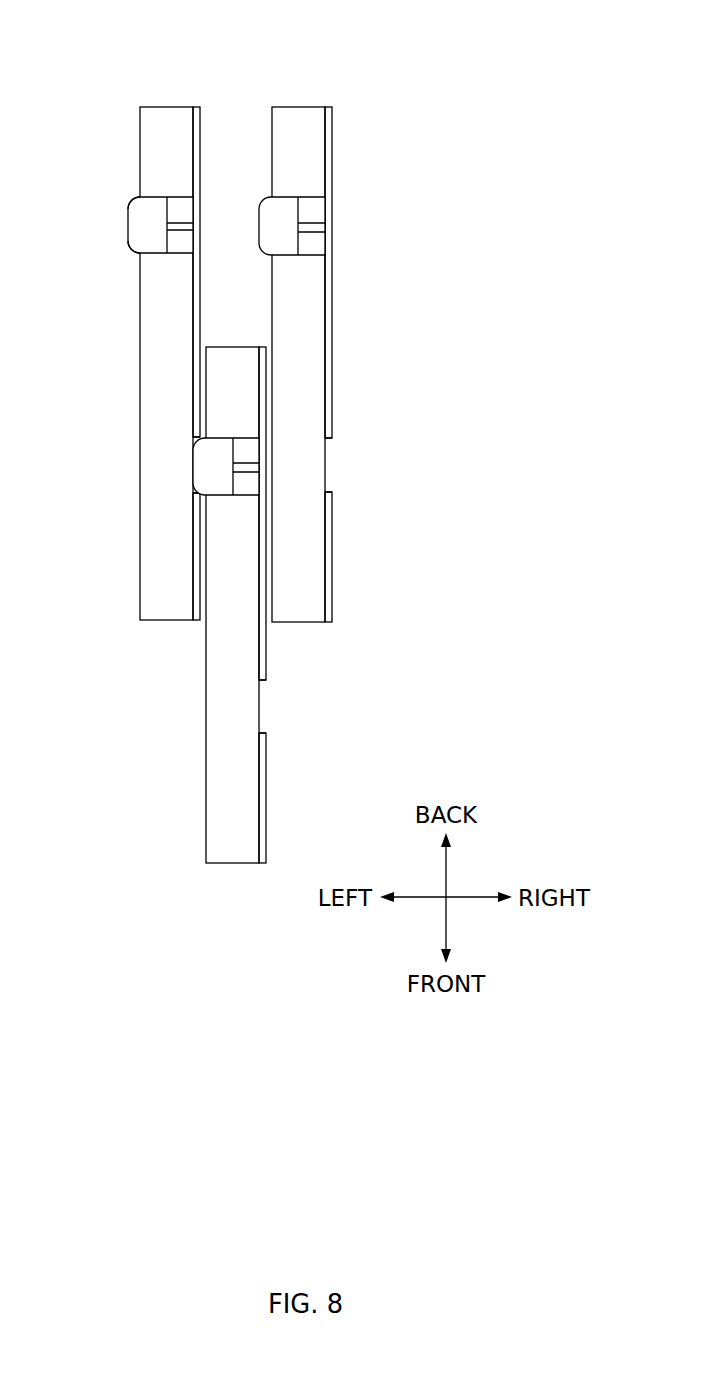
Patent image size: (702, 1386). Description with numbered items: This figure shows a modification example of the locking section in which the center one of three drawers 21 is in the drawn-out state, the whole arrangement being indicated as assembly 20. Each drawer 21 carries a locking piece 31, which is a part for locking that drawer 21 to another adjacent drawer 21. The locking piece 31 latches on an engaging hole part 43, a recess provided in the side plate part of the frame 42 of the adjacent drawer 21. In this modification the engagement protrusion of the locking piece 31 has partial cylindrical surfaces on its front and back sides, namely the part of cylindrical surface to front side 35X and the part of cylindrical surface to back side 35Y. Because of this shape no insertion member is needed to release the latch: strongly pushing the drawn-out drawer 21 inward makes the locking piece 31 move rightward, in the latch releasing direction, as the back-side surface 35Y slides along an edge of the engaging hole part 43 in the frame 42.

The connector unit assembly 20 is at (374, 64).
The drawer 21 is at (166, 107).
The locking piece 31 is at (130, 225).
The part of cylindrical surface to front side 35X is at (131, 252).
The part of cylindrical surface to back side 35Y is at (131, 198).
The frame 42 is at (196, 622).
The engaging hole part 43 is at (344, 465).